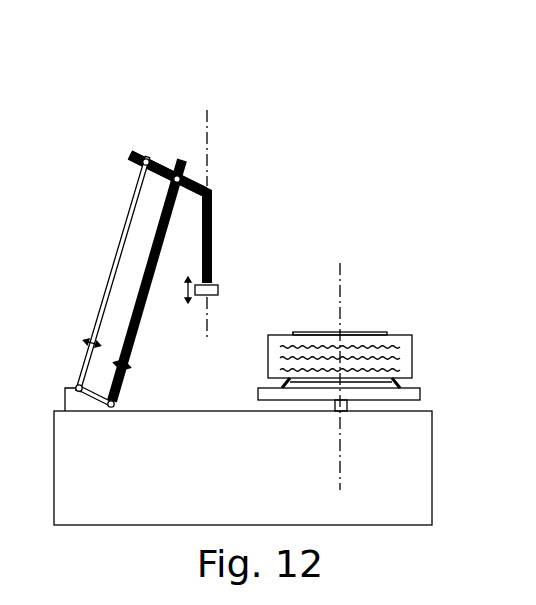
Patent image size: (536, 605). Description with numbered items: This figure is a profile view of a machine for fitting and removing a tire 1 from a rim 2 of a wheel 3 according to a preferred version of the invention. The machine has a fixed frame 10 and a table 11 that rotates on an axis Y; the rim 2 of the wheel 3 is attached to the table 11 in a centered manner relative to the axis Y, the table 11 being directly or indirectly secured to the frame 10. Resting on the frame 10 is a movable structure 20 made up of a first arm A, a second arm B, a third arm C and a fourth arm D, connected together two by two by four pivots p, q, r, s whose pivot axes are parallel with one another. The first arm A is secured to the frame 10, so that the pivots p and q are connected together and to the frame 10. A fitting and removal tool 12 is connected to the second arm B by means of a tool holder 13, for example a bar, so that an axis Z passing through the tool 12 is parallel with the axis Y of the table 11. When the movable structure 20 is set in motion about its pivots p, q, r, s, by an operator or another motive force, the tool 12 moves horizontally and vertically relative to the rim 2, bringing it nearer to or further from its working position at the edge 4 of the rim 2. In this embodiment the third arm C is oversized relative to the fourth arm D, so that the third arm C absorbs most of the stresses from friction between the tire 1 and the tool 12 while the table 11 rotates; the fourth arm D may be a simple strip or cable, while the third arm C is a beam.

The movable structure 20 is at (120, 276).
The tool holder 13 is at (213, 213).
The fitting and removal tool 12 is at (218, 290).
The wheel 3 is at (356, 321).
The tire 1 is at (407, 350).
The rim 2 is at (378, 330).
The edge of the rim 4 is at (292, 330).
The table 11 is at (410, 395).
The fixed frame 10 is at (423, 490).
The axis of the table Y is at (340, 363).
The axis of the tool Z is at (207, 209).
The first arm A is at (93, 400).
The second arm B is at (162, 164).
The third arm C is at (147, 308).
The fourth arm D is at (107, 290).
The pivot p is at (120, 403).
The pivot q is at (75, 387).
The pivot r is at (140, 165).
The pivot s is at (180, 190).